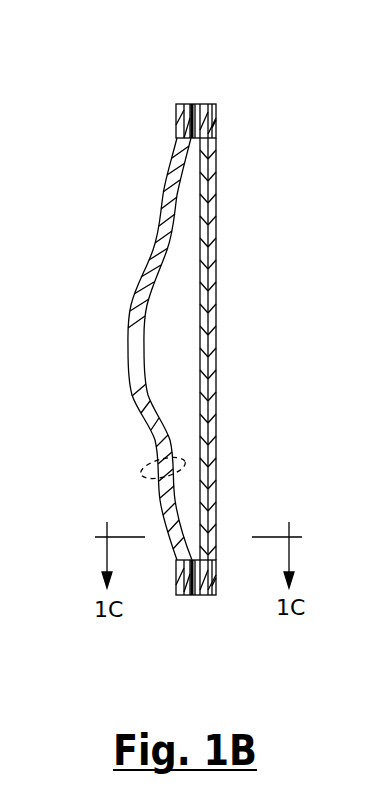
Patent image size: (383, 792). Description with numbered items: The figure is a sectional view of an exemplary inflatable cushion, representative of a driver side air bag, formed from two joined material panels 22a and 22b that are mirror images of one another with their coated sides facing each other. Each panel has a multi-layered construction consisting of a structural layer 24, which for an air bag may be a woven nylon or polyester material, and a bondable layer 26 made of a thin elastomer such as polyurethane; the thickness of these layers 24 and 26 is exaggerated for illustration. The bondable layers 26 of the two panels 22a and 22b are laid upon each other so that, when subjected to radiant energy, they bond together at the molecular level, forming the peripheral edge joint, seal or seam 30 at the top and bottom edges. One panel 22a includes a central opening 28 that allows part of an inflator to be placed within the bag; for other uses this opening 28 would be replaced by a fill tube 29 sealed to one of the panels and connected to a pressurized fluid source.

The material panel 22a is at (165, 190).
The material panel 22b is at (216, 187).
The structural layer 24 is at (216, 260).
The bondable layer 26 is at (205, 306).
The central opening 28 is at (128, 347).
The fill tube 29 is at (145, 473).
The peripheral edge joint 30 is at (192, 108).